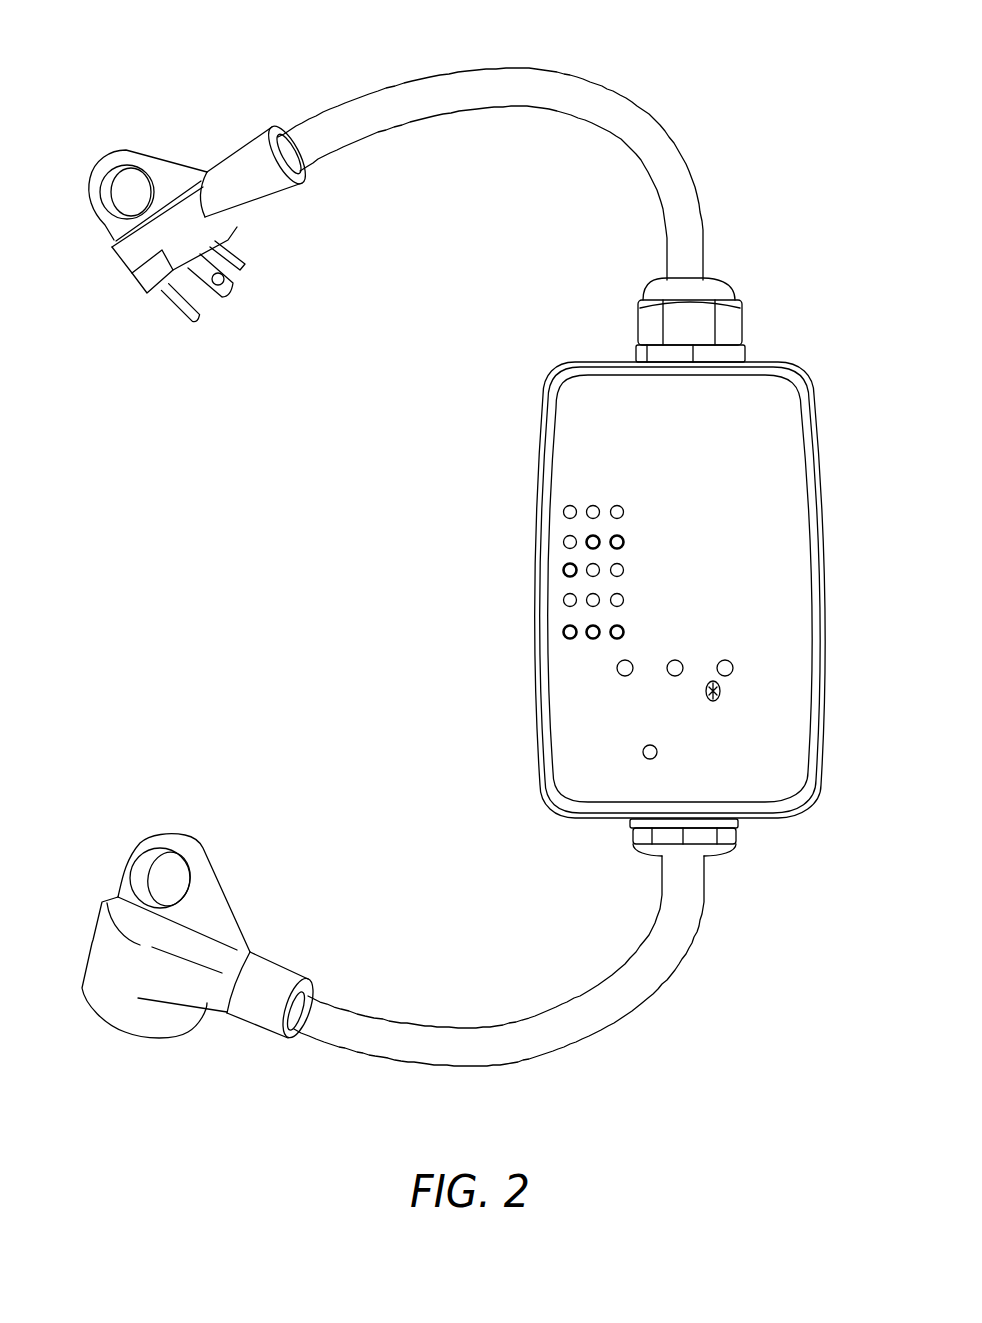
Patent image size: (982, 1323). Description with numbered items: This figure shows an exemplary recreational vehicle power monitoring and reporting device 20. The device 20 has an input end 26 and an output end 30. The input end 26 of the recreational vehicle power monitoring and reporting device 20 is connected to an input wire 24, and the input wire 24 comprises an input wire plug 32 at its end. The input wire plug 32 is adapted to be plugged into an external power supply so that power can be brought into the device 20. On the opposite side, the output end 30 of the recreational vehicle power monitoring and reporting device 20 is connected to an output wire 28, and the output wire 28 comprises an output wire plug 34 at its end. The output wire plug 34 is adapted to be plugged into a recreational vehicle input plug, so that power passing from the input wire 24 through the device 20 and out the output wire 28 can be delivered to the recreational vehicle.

The recreational vehicle power monitoring and reporting device 20 is at (463, 553).
The input wire 24 is at (522, 78).
The input end 26 is at (628, 342).
The output wire 28 is at (472, 1027).
The output end 30 is at (615, 843).
The input wire plug 32 is at (138, 295).
The output wire plug 34 is at (77, 943).